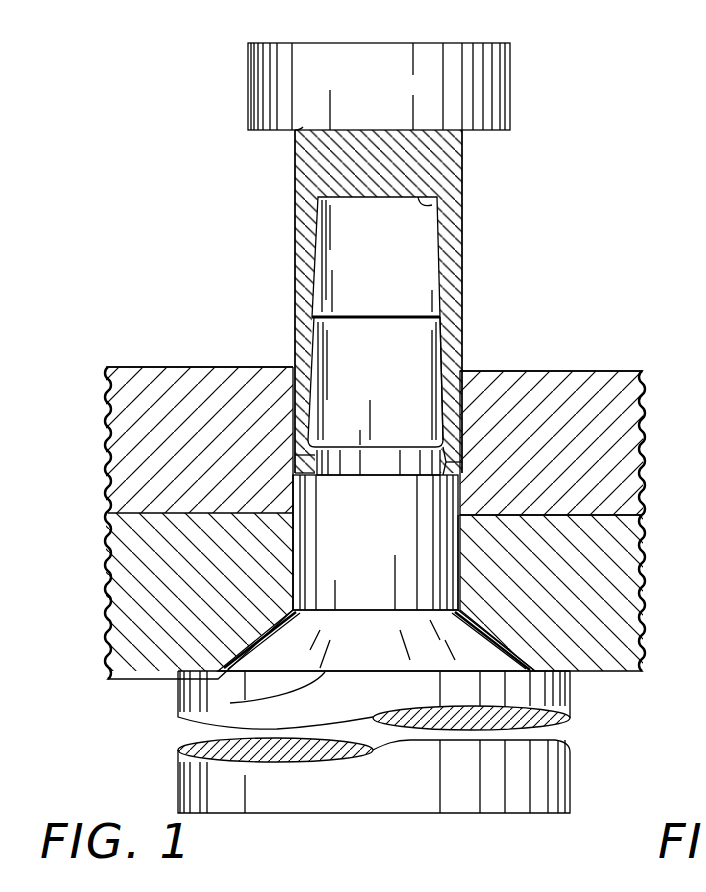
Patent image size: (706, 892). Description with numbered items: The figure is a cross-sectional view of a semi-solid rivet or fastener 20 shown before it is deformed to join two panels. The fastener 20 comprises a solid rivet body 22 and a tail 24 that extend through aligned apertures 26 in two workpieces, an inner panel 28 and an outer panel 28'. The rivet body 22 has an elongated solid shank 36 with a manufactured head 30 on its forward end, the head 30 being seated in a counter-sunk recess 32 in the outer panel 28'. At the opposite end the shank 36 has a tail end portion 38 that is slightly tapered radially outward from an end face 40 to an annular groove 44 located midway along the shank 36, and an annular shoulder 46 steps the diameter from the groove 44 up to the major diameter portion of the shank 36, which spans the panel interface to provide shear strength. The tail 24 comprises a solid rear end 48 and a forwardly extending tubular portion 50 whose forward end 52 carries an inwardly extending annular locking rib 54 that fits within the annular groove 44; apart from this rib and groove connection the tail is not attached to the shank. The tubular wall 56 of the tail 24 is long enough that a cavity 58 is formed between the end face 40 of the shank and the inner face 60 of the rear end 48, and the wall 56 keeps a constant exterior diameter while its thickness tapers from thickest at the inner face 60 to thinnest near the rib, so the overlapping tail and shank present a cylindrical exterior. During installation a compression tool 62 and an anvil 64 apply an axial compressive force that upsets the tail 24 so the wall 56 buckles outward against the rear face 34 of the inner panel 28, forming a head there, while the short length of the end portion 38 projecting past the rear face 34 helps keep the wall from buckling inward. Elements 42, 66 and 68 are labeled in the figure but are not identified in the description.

The fastener 20 is at (170, 76).
The rivet body 22 is at (341, 553).
The tail 24 is at (290, 165).
The aligned apertures 26 is at (458, 535).
The inner panel 28 is at (582, 443).
The outer panel 28' is at (583, 593).
The manufactured head 30 is at (361, 652).
The counter-sunk recess 32 is at (232, 655).
The rear face 34 is at (590, 371).
The shank 36 is at (364, 535).
The tail end portion 38 is at (366, 382).
The end face 40 is at (440, 305).
The ring insert 42 is at (460, 447).
The annular groove 44 is at (455, 460).
The annular shoulder 46 is at (460, 468).
The rear end 48 is at (450, 158).
The tubular portion 50 is at (290, 246).
The forward end 52 is at (295, 470).
The locking rib 54 is at (294, 447).
The tubular wall 56 is at (311, 318).
The cavity 58 is at (361, 280).
The inner face 60 is at (418, 200).
The compression tool 62 is at (366, 90).
The anvil 64 is at (361, 703).
The head fillet 66 is at (303, 127).
The stripper block edge 68 is at (230, 703).